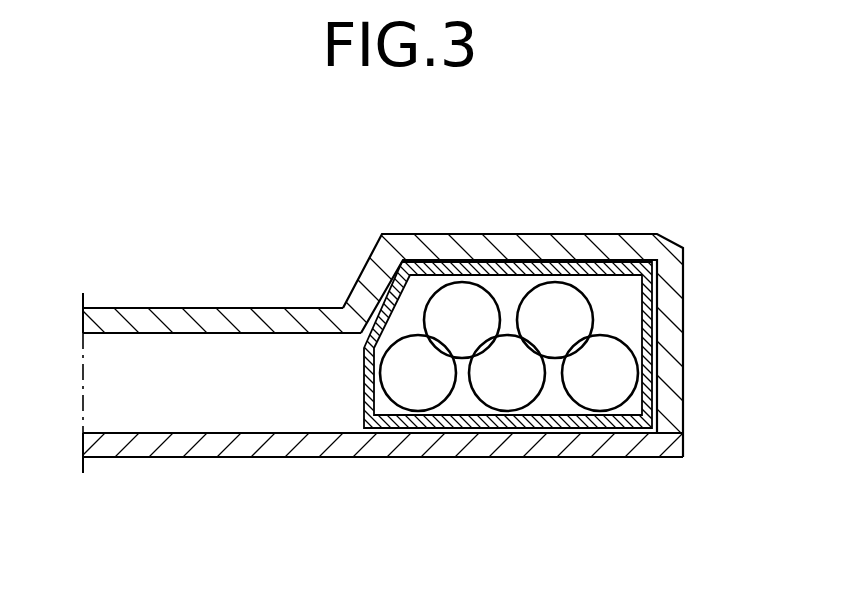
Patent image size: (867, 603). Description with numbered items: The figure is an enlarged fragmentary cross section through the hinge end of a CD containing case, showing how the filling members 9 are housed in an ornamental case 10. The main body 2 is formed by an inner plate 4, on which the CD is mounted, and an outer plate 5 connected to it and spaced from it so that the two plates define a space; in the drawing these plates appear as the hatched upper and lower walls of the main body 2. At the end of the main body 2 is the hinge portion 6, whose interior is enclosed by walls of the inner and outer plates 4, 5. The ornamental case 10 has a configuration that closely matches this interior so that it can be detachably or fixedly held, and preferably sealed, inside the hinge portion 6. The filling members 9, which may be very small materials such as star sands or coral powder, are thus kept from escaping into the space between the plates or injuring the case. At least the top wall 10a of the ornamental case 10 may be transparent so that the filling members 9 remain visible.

The main body 2 is at (433, 351).
The inner plate 4 is at (268, 308).
The outer plate 5 is at (200, 457).
The hinge portion 6 is at (347, 474).
The filling members 9 is at (608, 373).
The ornamental case 10 is at (433, 325).
The top wall 10a is at (560, 268).